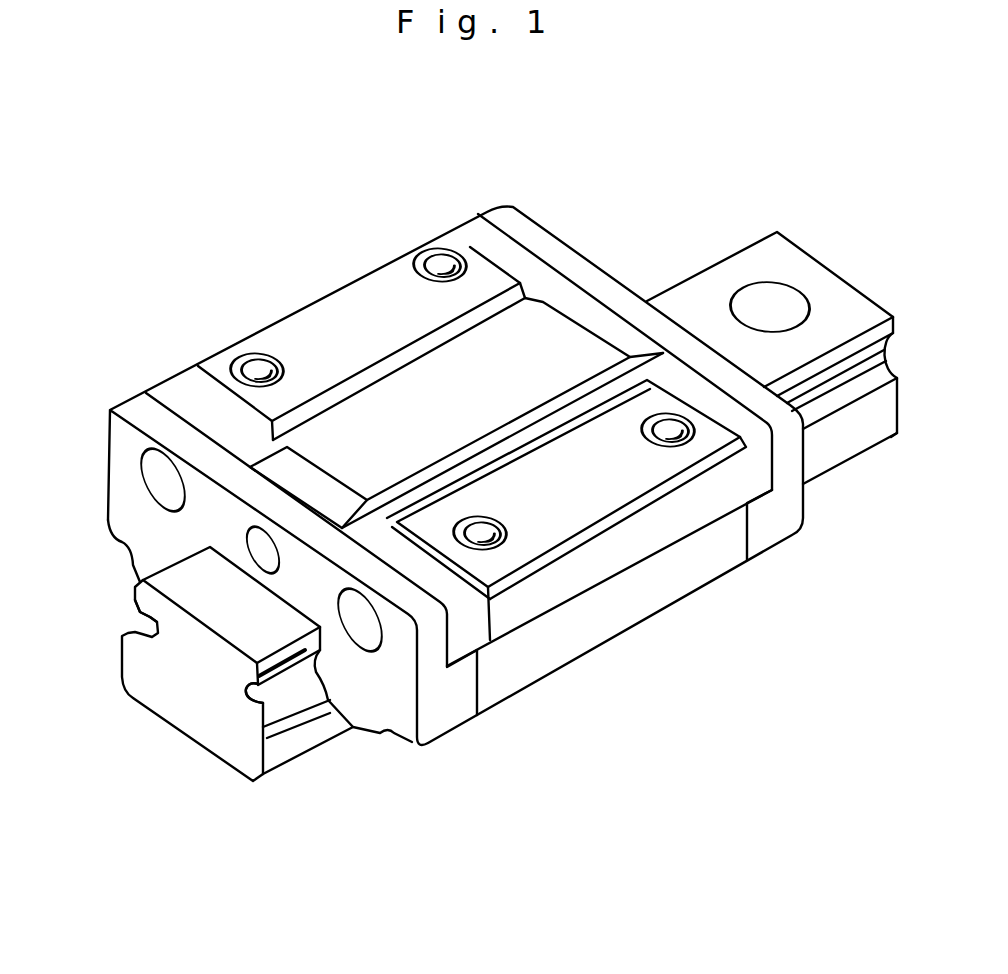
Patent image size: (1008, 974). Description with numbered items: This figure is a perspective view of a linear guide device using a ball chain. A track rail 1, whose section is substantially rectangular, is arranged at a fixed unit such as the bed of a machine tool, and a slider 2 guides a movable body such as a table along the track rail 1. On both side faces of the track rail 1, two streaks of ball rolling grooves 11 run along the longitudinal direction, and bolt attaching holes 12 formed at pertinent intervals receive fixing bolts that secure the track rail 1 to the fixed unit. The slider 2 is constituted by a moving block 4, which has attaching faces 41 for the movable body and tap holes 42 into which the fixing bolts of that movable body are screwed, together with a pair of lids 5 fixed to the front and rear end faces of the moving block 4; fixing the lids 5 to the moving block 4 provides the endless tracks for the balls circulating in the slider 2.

The track rail 1 is at (176, 754).
The slider 2 is at (551, 212).
The moving block 4 is at (527, 663).
The lids 5 is at (106, 428).
The ball rolling grooves 11 is at (132, 615).
The bolt attaching holes 12 is at (780, 300).
The attaching faces 41 is at (363, 310).
The tap holes 42 is at (253, 355).